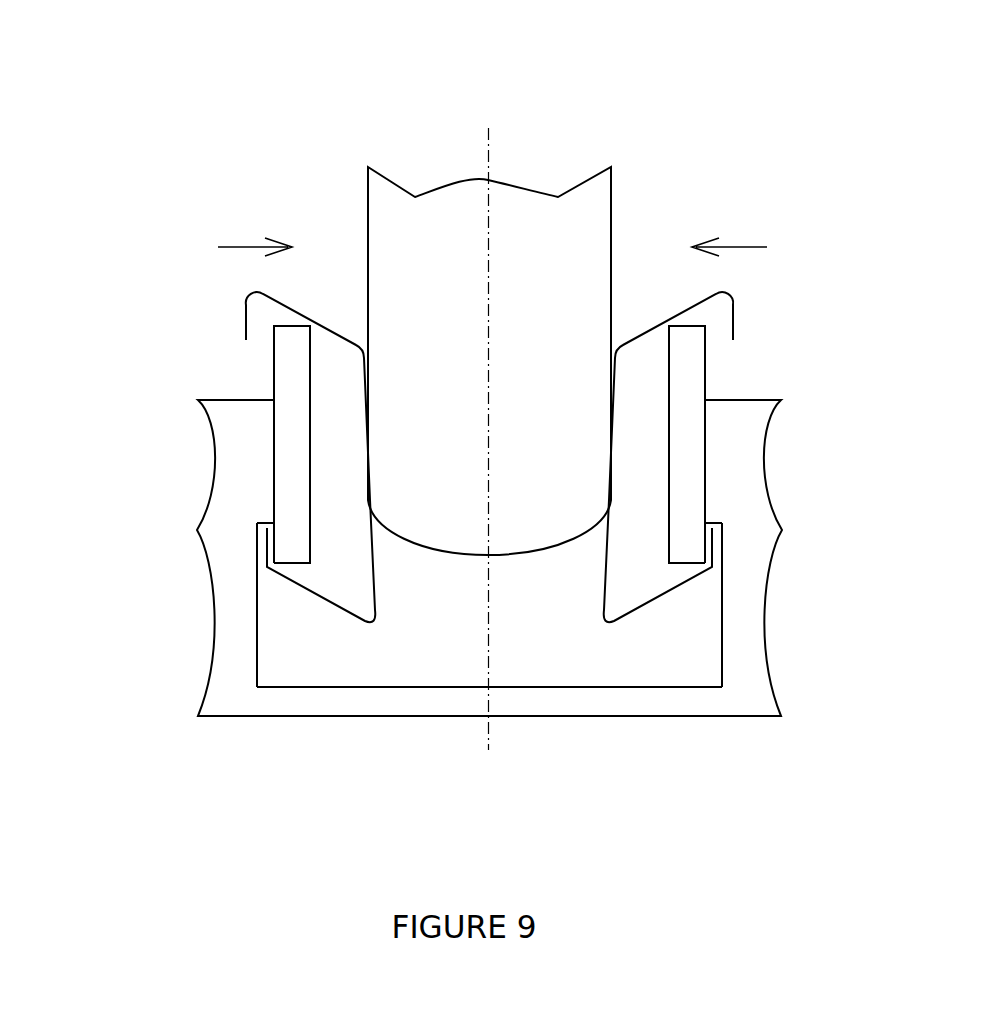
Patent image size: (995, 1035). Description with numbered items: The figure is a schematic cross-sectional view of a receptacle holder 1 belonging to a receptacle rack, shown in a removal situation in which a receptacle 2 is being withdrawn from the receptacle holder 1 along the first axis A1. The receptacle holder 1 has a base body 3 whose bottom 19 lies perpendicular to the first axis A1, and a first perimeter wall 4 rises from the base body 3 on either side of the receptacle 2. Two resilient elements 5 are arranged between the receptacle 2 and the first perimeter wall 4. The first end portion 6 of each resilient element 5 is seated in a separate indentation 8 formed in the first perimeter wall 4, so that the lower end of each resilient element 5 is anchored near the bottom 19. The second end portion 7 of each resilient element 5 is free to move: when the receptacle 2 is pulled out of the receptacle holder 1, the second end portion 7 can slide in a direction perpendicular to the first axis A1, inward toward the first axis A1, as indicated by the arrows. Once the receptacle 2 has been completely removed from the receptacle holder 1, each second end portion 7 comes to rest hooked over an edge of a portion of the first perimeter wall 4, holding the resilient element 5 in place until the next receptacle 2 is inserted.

The receptacle holder 1 is at (560, 120).
The first axis A1 is at (488, 210).
The receptacle 2 is at (612, 227).
The base body 3 is at (430, 702).
The first perimeter wall 4 is at (277, 387).
The resilient element 5 is at (310, 593).
The first end portion 6 is at (258, 547).
The second end portion 7 is at (238, 320).
The indentation 8 is at (260, 530).
The bottom 19 is at (532, 688).